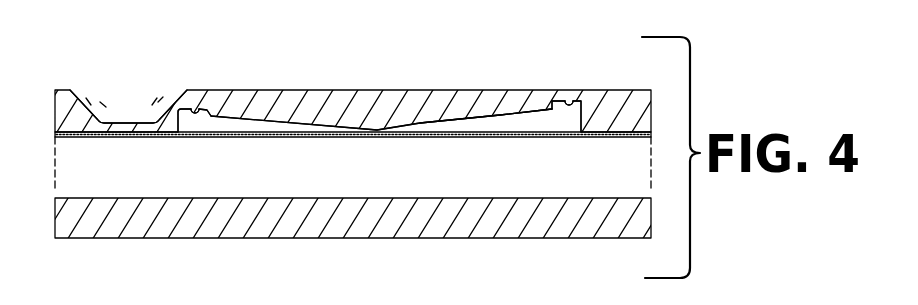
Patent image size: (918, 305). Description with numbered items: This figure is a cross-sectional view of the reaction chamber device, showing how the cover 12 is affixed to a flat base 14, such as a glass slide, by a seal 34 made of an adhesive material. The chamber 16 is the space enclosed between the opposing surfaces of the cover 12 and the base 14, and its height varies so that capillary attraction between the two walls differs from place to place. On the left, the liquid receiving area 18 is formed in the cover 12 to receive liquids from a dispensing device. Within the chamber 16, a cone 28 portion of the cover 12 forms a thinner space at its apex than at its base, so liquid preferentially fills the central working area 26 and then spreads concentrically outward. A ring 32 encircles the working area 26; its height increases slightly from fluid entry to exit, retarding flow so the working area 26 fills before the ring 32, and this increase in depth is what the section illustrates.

The cover 12 is at (47, 103).
The base 14 is at (122, 238).
The chamber 16 is at (581, 143).
The liquid receiving area 18 is at (122, 102).
The working area 26 is at (478, 125).
The cone 28 is at (506, 118).
The ring 32 is at (193, 109).
The seal 34 is at (97, 138).